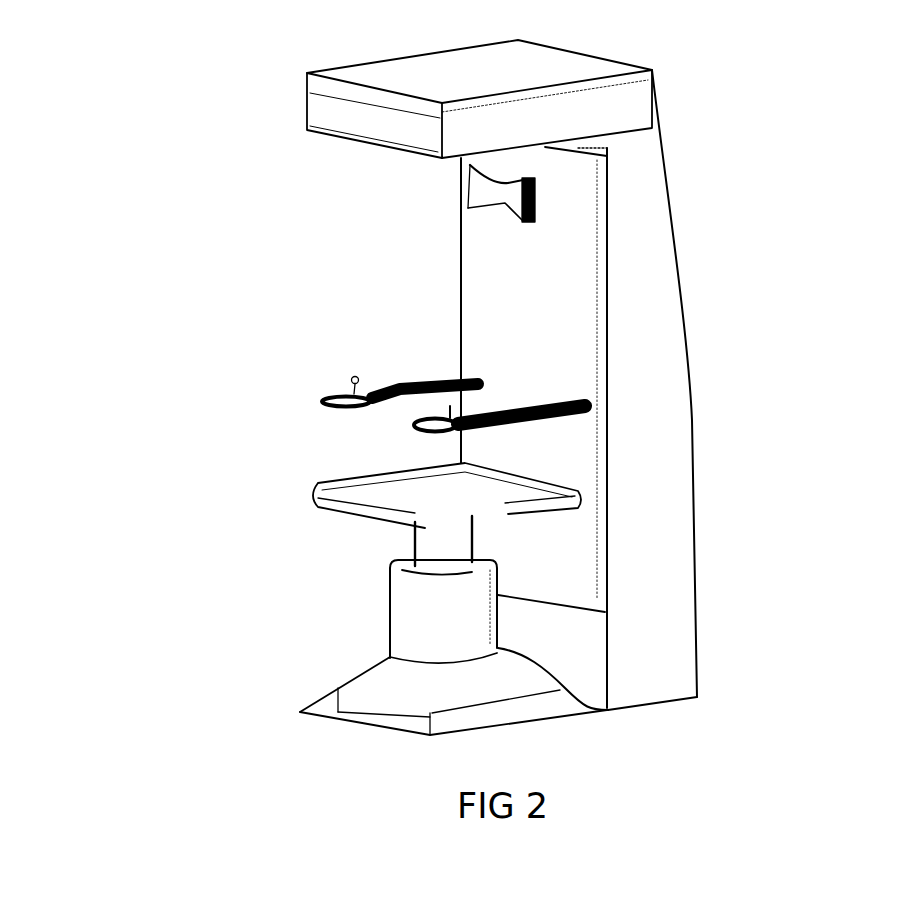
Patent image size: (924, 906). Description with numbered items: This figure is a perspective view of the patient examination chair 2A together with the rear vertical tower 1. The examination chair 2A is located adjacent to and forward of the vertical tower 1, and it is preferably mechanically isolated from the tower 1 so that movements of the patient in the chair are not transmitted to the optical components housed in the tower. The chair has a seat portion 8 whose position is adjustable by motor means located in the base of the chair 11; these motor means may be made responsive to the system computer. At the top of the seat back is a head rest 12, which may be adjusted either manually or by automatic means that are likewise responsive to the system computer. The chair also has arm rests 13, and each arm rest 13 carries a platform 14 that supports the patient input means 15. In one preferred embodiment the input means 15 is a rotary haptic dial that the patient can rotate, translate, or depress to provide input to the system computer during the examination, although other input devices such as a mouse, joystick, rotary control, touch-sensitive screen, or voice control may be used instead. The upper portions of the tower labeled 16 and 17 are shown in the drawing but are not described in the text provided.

The vertical tower 1 is at (655, 275).
The examination chair 2A is at (490, 293).
The seat portion 8 is at (383, 498).
The base of the chair 11 is at (383, 670).
The head rest 12 is at (545, 192).
The arm rests 13 is at (415, 383).
The platform 14 is at (317, 402).
The patient input means 15 is at (335, 385).
The head housing 16 is at (600, 110).
The front portion of head housing 17 is at (352, 128).